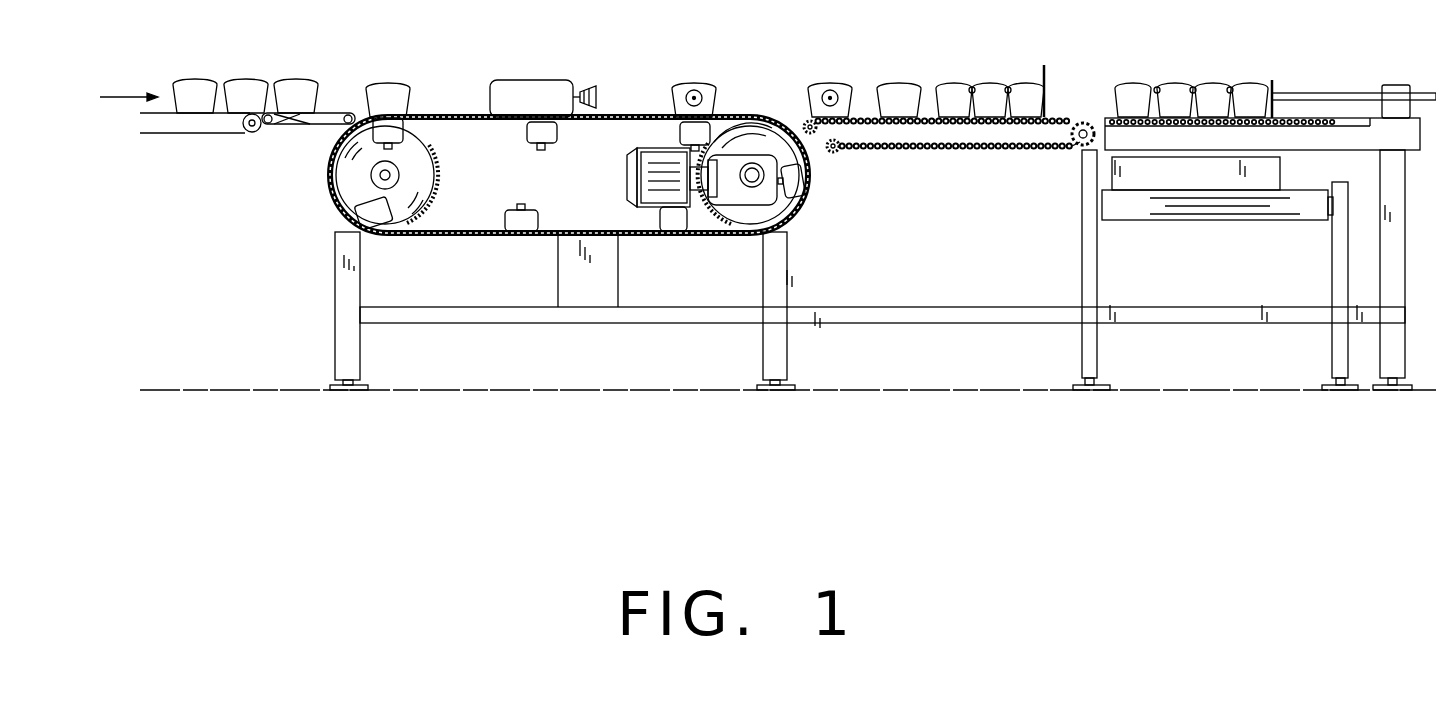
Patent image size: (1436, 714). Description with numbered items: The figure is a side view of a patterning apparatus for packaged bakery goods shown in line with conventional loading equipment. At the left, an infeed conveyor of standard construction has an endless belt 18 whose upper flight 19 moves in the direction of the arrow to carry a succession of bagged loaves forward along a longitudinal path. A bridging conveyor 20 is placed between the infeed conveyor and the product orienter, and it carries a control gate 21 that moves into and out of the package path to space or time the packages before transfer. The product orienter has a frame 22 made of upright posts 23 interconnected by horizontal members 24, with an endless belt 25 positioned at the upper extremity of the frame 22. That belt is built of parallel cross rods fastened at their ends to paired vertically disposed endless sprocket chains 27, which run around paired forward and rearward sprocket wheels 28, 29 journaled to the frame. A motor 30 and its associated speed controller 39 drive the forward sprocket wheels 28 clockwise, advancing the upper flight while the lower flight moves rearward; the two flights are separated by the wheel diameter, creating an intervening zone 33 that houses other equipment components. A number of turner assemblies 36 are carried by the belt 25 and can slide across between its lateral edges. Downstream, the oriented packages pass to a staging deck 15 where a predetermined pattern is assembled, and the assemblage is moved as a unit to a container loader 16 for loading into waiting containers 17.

The staging deck 15 is at (953, 60).
The container loader 16 is at (1207, 113).
The containers 17 is at (1201, 173).
The endless belt 18 is at (197, 135).
The upper flight 19 is at (168, 112).
The bridging conveyor 20 is at (331, 95).
The control gate 21 is at (312, 125).
The frame 22 is at (822, 270).
The upright posts 23 is at (335, 355).
The horizontal members 24 is at (500, 323).
The endless belt 25 is at (462, 84).
The endless sprocket chains 27 is at (641, 233).
The forward sprocket wheels 28 is at (757, 120).
The rearward sprocket wheels 29 is at (433, 125).
The motor 30 is at (657, 147).
The intervening zone 33 is at (585, 193).
The turner assemblies 36 is at (522, 233).
The speed controller 39 is at (745, 232).